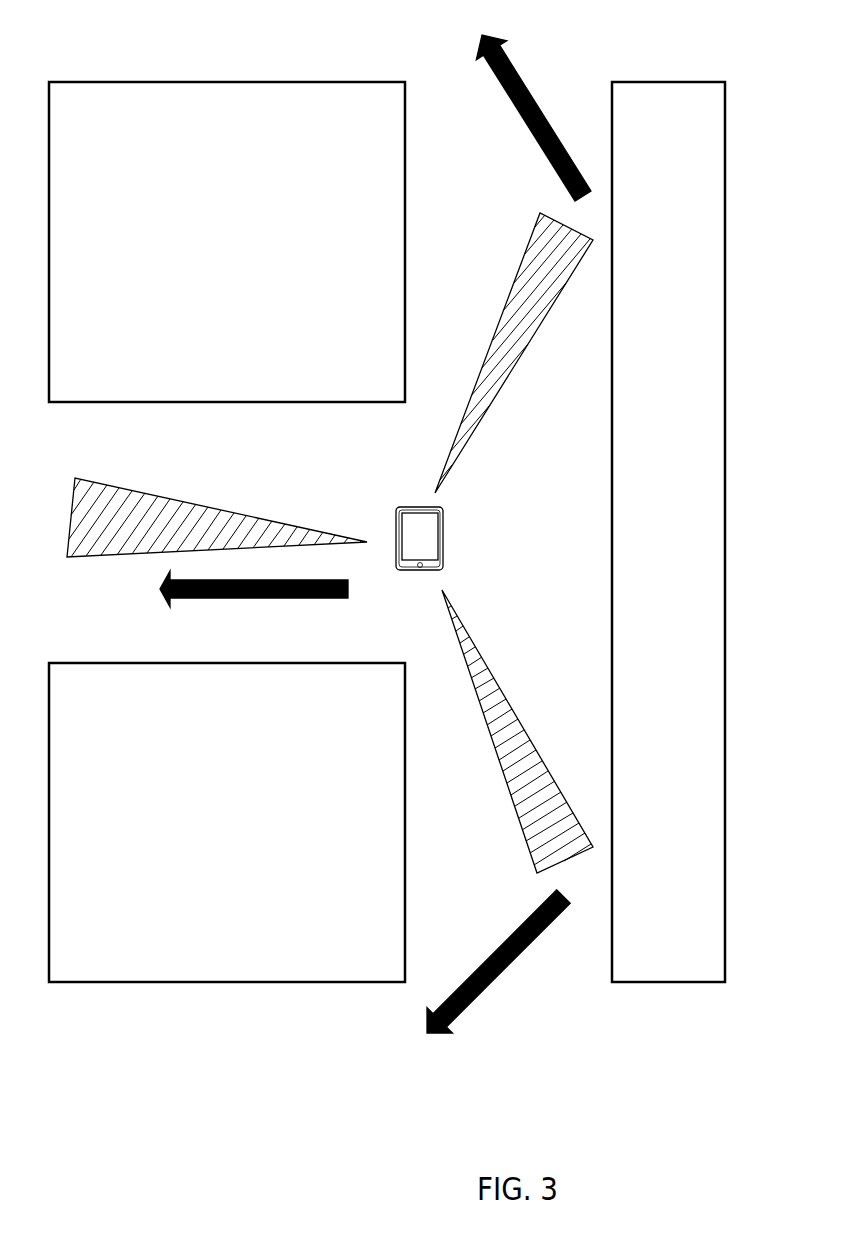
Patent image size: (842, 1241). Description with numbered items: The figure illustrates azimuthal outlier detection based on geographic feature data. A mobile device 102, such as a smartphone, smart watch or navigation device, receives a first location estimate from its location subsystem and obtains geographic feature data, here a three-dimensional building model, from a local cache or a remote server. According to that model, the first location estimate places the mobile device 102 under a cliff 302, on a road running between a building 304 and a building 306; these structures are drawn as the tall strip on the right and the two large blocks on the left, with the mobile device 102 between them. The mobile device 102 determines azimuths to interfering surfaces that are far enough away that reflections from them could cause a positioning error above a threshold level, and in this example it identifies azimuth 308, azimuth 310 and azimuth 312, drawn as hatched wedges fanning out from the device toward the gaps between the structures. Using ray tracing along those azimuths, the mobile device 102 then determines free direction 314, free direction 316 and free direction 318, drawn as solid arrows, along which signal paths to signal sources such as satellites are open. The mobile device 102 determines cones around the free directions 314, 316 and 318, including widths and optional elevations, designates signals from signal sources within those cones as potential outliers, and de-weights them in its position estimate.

The mobile device 102 is at (395, 510).
The cliff 302 is at (660, 82).
The building 304 is at (369, 82).
The building 306 is at (238, 983).
The azimuth 308 is at (454, 458).
The azimuth 310 is at (455, 625).
The azimuth 312 is at (162, 497).
The free direction 314 is at (518, 62).
The free direction 316 is at (466, 1007).
The free direction 318 is at (248, 598).